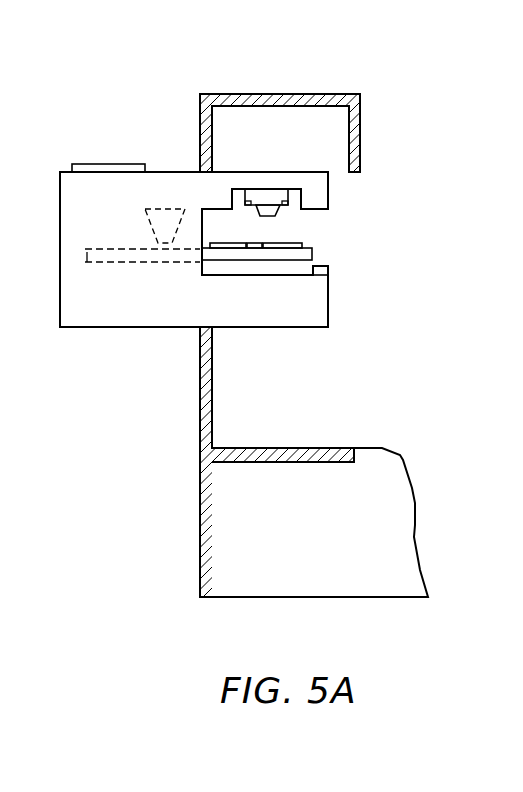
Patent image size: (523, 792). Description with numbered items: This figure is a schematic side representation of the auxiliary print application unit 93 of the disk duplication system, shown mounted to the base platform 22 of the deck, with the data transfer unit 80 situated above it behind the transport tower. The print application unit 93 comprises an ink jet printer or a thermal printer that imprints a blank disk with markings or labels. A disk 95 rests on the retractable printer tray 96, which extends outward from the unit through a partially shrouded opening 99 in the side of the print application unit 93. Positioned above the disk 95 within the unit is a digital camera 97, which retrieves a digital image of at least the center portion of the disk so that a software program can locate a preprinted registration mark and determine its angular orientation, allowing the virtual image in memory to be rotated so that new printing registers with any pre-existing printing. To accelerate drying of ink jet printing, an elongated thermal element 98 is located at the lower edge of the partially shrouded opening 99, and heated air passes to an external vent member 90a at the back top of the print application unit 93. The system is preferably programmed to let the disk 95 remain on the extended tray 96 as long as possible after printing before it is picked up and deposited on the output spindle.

The data transfer unit 80 is at (280, 107).
The partially shrouded opening 99 is at (379, 191).
The print application unit 93 is at (194, 206).
The external vent member 90a is at (93, 146).
The digital camera 97 is at (249, 214).
The disk 95 is at (292, 231).
The retractable printer tray 96 is at (302, 252).
The elongated thermal element 98 is at (360, 284).
The base platform 22 is at (285, 462).